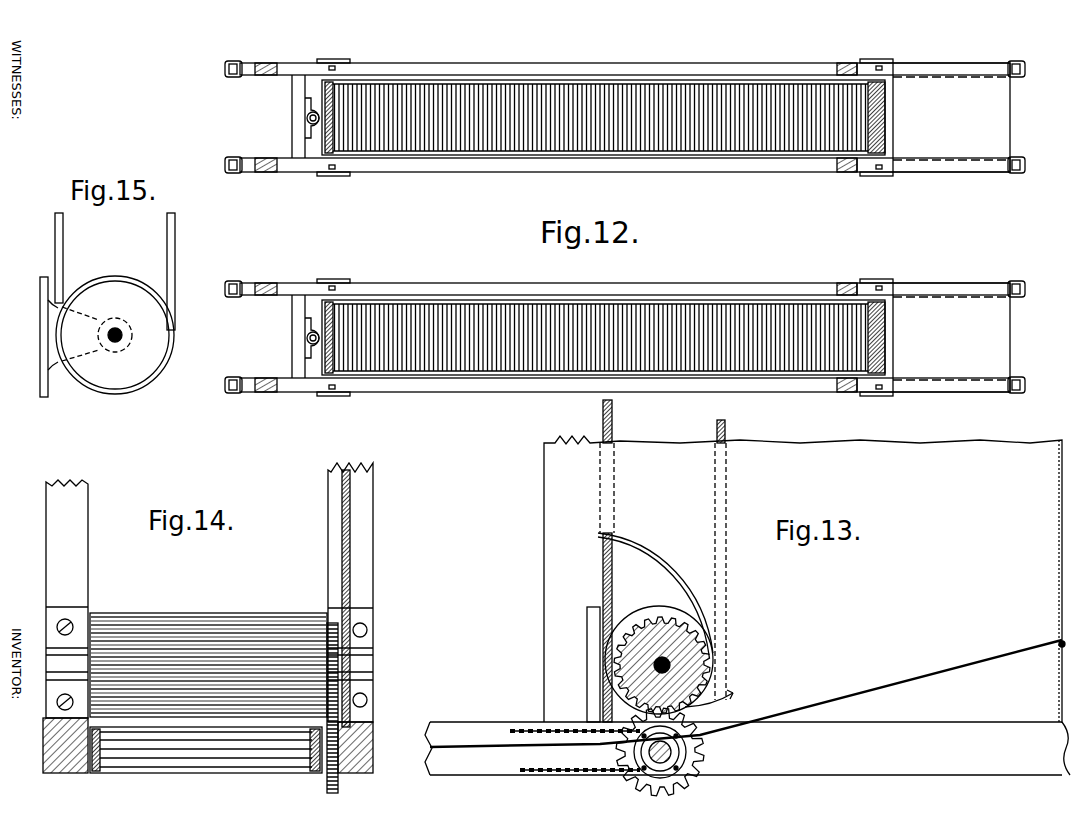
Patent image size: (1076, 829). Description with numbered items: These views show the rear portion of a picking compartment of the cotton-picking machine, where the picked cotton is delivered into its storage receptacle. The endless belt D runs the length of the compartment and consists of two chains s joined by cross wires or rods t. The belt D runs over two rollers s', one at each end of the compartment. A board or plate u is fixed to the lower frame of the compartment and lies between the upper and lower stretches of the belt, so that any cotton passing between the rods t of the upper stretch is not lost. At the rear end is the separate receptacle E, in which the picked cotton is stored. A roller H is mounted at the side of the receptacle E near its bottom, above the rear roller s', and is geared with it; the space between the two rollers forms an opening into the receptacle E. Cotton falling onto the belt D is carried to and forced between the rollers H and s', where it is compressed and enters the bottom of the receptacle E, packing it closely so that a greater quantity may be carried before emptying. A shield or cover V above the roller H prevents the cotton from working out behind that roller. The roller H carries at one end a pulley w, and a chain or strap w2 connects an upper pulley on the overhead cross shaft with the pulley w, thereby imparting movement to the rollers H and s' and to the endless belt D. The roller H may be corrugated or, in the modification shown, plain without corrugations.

In FIG. 12, the endless belt D is at (726, 96).
In FIG. 12, the receptacle E is at (951, 227).
In FIG. 13, the receptacle E is at (803, 579).
In FIG. 12, the chains s is at (600, 251).
In FIG. 13, the chains s is at (575, 735).
In FIG. 12, the rollers s' is at (590, 227).
In FIG. 14, the rollers s' is at (206, 765).
In FIG. 13, the rollers s' is at (676, 752).
In FIG. 12, the cross wires or rods t is at (470, 316).
In FIG. 14, the cross wires or rods t is at (212, 752).
In FIG. 13, the board or plate u is at (747, 695).
In FIG. 15, the roller H is at (155, 329).
In FIG. 14, the roller H is at (278, 640).
In FIG. 13, the roller H is at (688, 652).
In FIG. 15, the pulley w is at (100, 283).
In FIG. 14, the pulley w is at (352, 640).
In FIG. 13, the pulley w is at (645, 613).
In FIG. 15, the chain or strap w2 is at (168, 258).
In FIG. 14, the chain or strap w2 is at (345, 528).
In FIG. 13, the chain or strap w2 is at (605, 560).
In FIG. 13, the shield or cover V is at (668, 575).